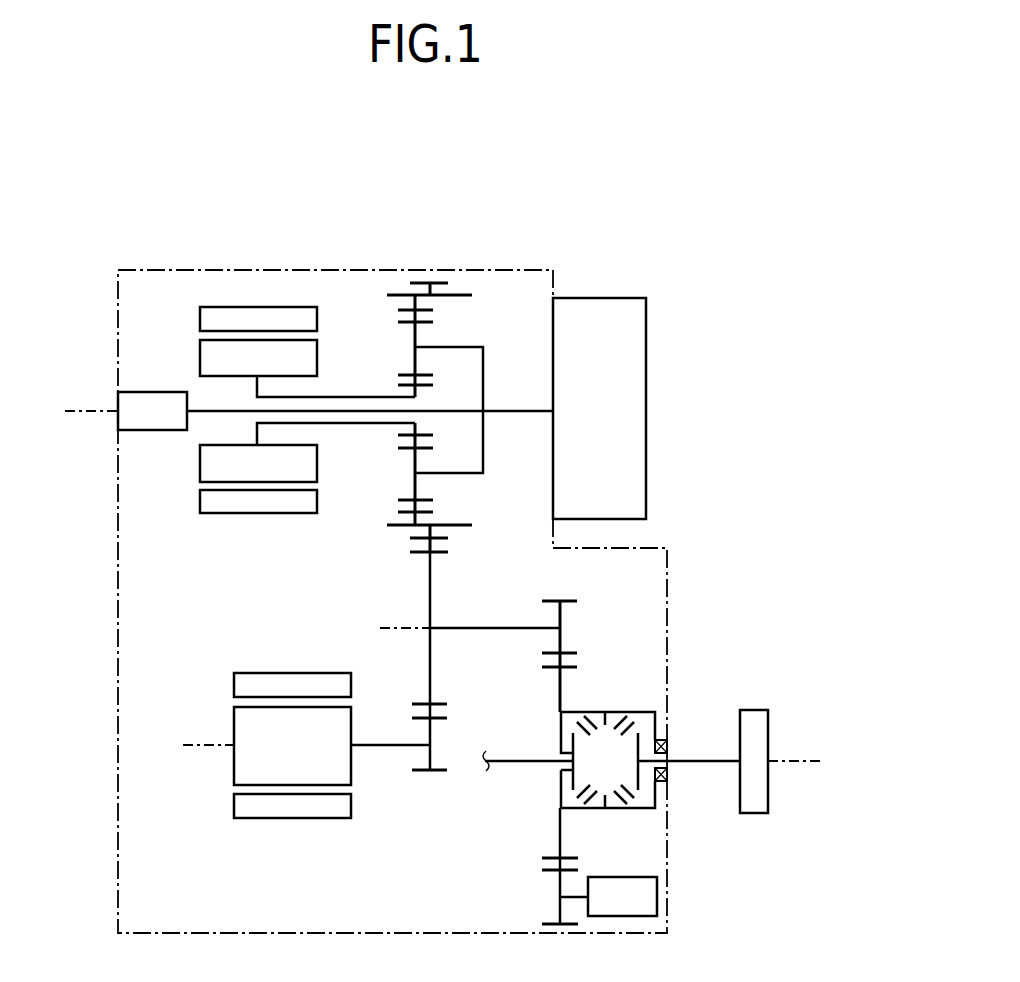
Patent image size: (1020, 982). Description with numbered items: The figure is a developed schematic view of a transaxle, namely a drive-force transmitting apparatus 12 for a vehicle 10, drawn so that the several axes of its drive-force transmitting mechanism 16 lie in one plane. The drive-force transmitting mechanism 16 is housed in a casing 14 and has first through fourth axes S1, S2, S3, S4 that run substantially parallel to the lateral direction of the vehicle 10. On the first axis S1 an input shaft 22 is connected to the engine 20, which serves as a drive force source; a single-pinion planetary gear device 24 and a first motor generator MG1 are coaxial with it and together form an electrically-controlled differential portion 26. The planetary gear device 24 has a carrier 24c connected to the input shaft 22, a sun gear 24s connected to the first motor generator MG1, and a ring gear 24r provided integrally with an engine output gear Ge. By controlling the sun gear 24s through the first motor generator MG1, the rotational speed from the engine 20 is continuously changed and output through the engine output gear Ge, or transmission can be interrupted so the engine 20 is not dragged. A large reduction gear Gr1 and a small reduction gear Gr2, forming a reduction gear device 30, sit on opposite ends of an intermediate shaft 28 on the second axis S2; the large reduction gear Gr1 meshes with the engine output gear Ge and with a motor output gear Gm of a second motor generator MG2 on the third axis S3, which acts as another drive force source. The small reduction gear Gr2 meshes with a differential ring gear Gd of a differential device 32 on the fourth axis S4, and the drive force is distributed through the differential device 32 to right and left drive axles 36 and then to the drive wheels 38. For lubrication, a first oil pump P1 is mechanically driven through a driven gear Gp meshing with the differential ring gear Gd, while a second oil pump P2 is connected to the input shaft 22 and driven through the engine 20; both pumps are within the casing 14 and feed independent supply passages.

The vehicle 10 is at (625, 193).
The drive-force transmitting apparatus 12 is at (265, 205).
The casing 14 is at (116, 572).
The drive-force transmitting mechanism 16 is at (558, 887).
The engine 20 is at (635, 358).
The input shaft 22 is at (516, 413).
The planetary gear device 24 is at (412, 441).
The carrier 24c is at (458, 346).
The sun gear 24s is at (404, 384).
The ring gear 24r is at (438, 512).
The electrically-controlled differential portion 26 is at (462, 270).
The intermediate shaft 28 is at (485, 631).
The reduction gear device 30 is at (578, 639).
The differential device 32 is at (646, 836).
The drive axles 36 is at (522, 765).
The drive wheels 38 is at (752, 720).
The engine output gear Ge is at (420, 281).
The large reduction gear Gr1 is at (442, 550).
The small reduction gear Gr2 is at (567, 599).
The differential ring gear Gd is at (581, 667).
The motor output gear Gm is at (421, 774).
The driven gear Gp is at (568, 928).
The first axis S1 is at (78, 420).
The second axis S2 is at (390, 626).
The third axis S3 is at (194, 752).
The fourth axis S4 is at (789, 763).
The first oil pump P1 is at (608, 896).
The second oil pump P2 is at (152, 411).
The first motor generator MG1 is at (307, 398).
The second motor generator MG2 is at (332, 734).